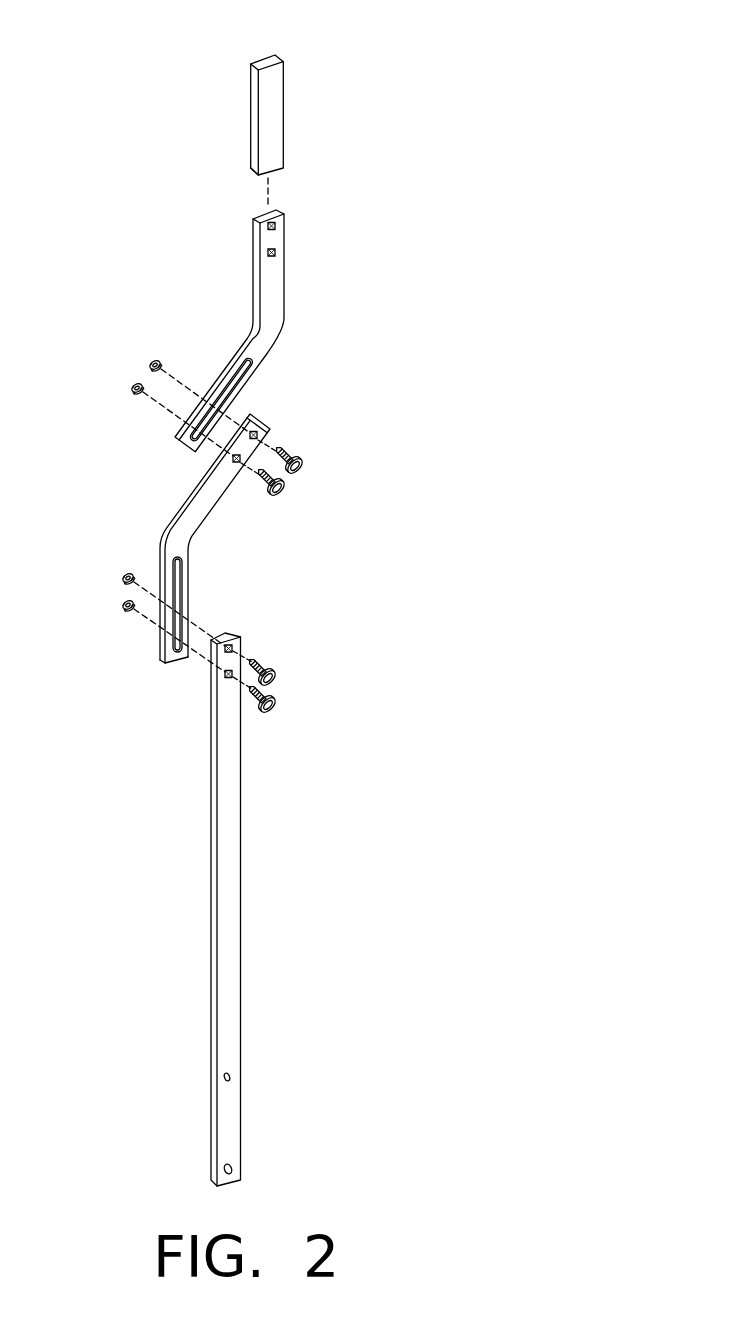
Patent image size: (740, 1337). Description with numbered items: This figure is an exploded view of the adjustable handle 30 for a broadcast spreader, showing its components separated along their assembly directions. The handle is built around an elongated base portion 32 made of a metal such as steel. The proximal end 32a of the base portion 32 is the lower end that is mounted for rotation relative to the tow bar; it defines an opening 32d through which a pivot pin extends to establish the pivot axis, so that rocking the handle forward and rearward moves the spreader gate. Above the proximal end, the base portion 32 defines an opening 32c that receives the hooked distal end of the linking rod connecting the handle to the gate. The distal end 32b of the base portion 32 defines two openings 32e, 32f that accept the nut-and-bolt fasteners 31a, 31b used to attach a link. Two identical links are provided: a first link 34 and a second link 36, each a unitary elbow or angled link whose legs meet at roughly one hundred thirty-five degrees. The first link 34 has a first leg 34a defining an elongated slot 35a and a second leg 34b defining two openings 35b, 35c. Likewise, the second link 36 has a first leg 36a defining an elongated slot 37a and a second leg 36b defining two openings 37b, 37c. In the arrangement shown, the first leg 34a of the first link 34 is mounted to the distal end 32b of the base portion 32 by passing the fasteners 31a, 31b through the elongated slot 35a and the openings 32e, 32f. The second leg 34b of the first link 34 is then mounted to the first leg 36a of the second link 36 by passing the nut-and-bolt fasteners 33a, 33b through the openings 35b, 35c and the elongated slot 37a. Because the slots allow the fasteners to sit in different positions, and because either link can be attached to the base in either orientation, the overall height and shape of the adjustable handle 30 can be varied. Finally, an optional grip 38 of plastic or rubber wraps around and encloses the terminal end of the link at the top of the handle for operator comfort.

The adjustable handle 30 is at (99, 166).
The fastener 31a is at (276, 683).
The fastener 31b is at (274, 711).
The elongated base portion 32 is at (254, 915).
The proximal end of the base portion 32a is at (211, 1180).
The distal end of the base portion 32b is at (232, 646).
The opening 32c is at (230, 1075).
The opening 32d is at (236, 1172).
The opening 32e is at (222, 650).
The opening 32f is at (230, 678).
The fastener 33a is at (302, 467).
The fastener 33b is at (283, 490).
The first link 34 is at (220, 543).
The first leg of the first link 34a is at (185, 607).
The second leg of the first link 34b is at (190, 520).
The elongated slot 35a is at (177, 570).
The opening 35b is at (258, 435).
The opening 35c is at (238, 466).
The second link 36 is at (265, 331).
The first leg of the second link 36a is at (260, 372).
The second leg of the second link 36b is at (252, 275).
The elongated slot 37a is at (220, 370).
The opening 37b is at (275, 226).
The opening 37c is at (276, 252).
The grip 38 is at (283, 108).